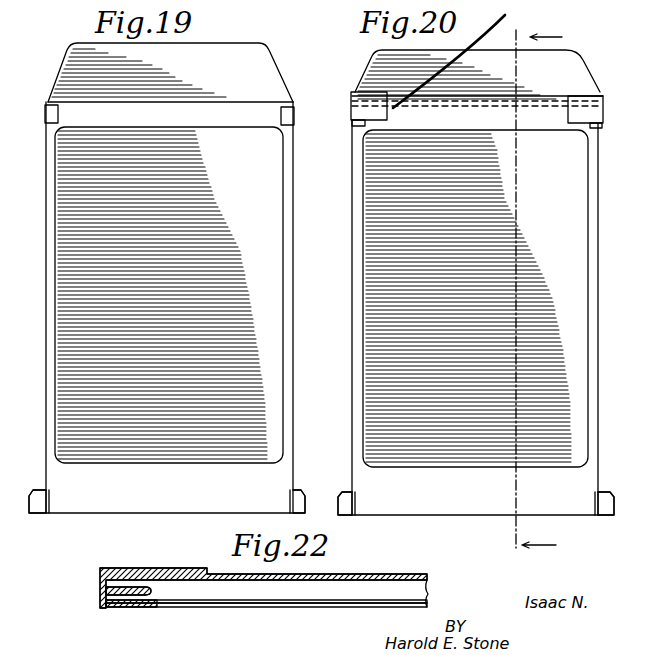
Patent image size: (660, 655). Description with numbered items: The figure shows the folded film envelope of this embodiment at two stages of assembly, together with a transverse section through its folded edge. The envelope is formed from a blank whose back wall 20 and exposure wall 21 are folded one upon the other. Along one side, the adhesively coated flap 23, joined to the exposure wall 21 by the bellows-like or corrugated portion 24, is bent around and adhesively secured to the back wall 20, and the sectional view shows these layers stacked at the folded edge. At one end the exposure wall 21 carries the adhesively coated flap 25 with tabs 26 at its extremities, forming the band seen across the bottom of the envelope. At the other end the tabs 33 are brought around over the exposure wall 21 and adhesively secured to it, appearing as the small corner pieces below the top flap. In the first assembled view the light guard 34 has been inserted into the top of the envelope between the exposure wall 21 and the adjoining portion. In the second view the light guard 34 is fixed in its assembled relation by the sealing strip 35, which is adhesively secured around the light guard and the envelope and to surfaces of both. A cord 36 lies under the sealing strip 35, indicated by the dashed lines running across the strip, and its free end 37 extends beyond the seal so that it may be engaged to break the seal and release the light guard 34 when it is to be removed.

In FIG. 22, the back wall 20 is at (388, 579).
In FIG. 19, the exposure wall 21 is at (250, 122).
In FIG. 20, the exposure wall 21 is at (553, 124).
In FIG. 22, the exposure wall 21 is at (132, 609).
In FIG. 22, the adhesively coated flap 23 is at (161, 574).
In FIG. 22, the bellows-like or corrugated portion 24 is at (157, 590).
In FIG. 19, the adhesively coated flap 25 is at (128, 500).
In FIG. 20, the adhesively coated flap 25 is at (485, 503).
In FIG. 19, the tabs 26 is at (37, 508).
In FIG. 20, the tabs 26 is at (613, 507).
In FIG. 19, the tabs 33 is at (58, 118).
In FIG. 20, the tabs 33 is at (342, 140).
In FIG. 19, the light guard 34 is at (236, 54).
In FIG. 20, the light guard 34 is at (588, 80).
In FIG. 20, the sealing strip 35 is at (355, 97).
In FIG. 20, the cord 36 is at (478, 111).
In FIG. 20, the free end 37 is at (500, 27).